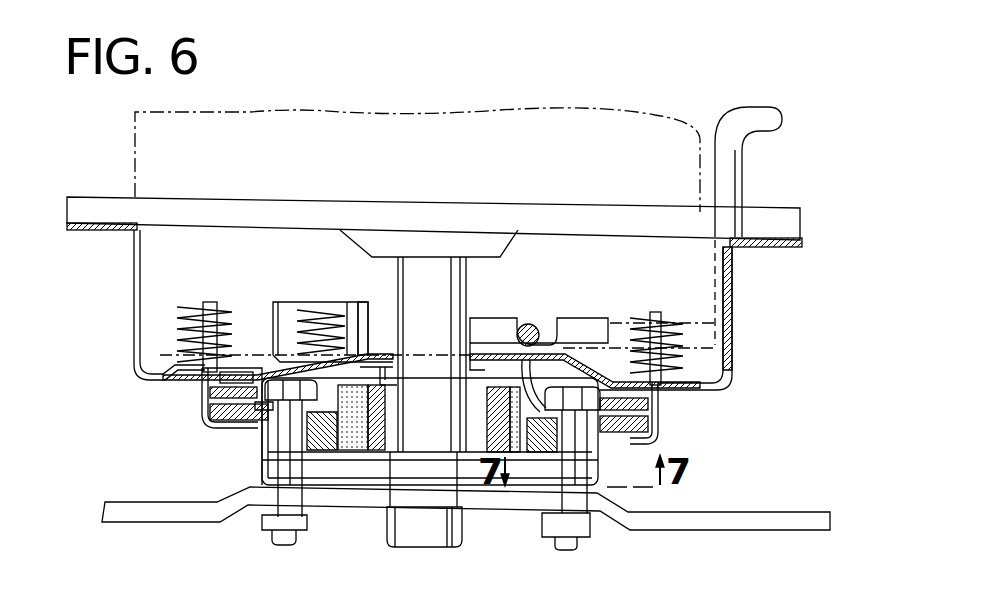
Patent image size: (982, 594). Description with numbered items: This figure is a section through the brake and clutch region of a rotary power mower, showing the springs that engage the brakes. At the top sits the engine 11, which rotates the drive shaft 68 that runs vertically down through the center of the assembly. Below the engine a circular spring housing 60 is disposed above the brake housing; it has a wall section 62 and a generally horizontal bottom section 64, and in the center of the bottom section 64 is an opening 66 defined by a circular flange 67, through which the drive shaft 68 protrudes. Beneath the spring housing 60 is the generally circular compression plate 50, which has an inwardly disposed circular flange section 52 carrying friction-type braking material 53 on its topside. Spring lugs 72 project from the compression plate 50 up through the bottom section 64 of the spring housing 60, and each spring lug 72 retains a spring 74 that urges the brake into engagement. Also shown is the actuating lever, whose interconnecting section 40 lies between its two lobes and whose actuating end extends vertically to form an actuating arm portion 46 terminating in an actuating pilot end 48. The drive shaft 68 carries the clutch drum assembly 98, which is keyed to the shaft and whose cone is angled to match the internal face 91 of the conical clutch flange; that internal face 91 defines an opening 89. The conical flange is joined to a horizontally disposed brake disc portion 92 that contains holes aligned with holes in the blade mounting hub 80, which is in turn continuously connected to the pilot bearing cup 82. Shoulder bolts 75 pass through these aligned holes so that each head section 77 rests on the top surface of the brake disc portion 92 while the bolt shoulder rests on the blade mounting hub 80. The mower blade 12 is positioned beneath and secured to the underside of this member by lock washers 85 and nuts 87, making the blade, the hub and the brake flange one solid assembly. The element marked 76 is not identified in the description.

The engine 11 is at (525, 110).
The mower blade 12 is at (664, 520).
The interconnecting section 40 is at (531, 323).
The actuating arm portion 46 is at (745, 158).
The actuating pilot end 48 is at (783, 125).
The compression plate 50 is at (206, 425).
The circular flange section 52 is at (655, 440).
The friction-type braking material 53 is at (660, 422).
The spring housing 60 is at (148, 378).
The wall section 62 is at (730, 357).
The bottom section 64 is at (370, 300).
The opening 66 is at (473, 353).
The circular flange 67 is at (388, 372).
The drive shaft 68 is at (453, 288).
The spring lug 72 is at (293, 300).
The spring 74 is at (300, 317).
The shoulder bolt 75 is at (275, 442).
The washer stack 76 is at (215, 392).
The head section 77 is at (290, 397).
The blade mounting hub 80 is at (467, 487).
The pilot bearing cup 82 is at (432, 548).
The lock washer 85 is at (263, 508).
The nut 87 is at (268, 530).
The opening 89 is at (362, 355).
The internal face 91 is at (527, 383).
The brake disc portion 92 is at (206, 413).
The clutch drum assembly 98 is at (353, 425).